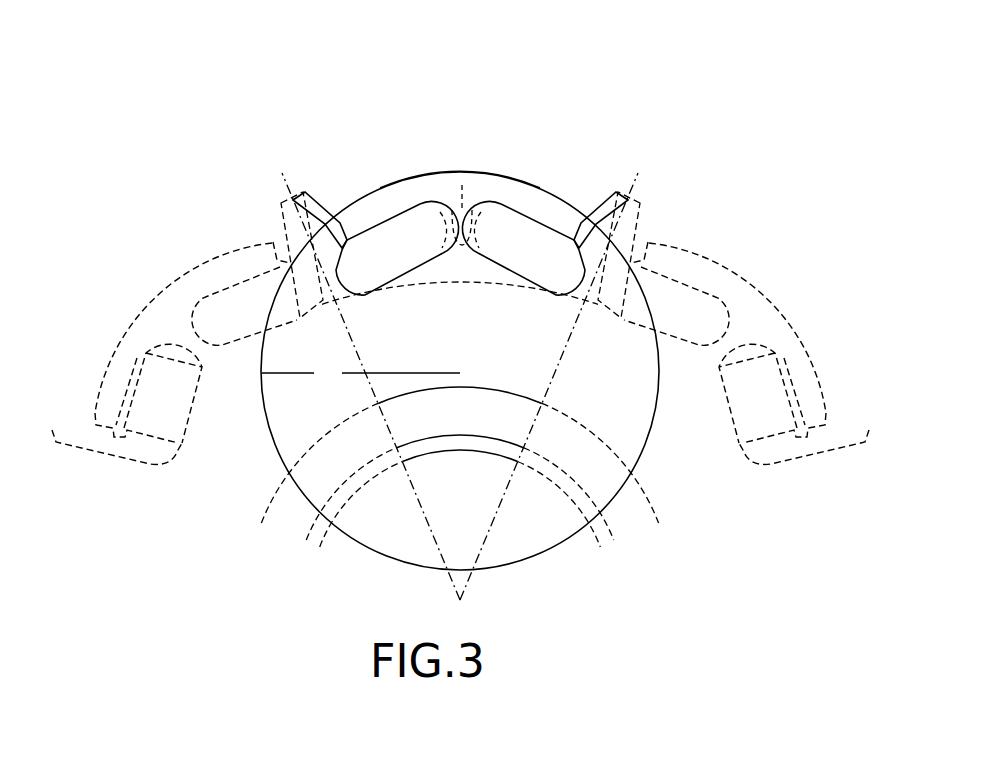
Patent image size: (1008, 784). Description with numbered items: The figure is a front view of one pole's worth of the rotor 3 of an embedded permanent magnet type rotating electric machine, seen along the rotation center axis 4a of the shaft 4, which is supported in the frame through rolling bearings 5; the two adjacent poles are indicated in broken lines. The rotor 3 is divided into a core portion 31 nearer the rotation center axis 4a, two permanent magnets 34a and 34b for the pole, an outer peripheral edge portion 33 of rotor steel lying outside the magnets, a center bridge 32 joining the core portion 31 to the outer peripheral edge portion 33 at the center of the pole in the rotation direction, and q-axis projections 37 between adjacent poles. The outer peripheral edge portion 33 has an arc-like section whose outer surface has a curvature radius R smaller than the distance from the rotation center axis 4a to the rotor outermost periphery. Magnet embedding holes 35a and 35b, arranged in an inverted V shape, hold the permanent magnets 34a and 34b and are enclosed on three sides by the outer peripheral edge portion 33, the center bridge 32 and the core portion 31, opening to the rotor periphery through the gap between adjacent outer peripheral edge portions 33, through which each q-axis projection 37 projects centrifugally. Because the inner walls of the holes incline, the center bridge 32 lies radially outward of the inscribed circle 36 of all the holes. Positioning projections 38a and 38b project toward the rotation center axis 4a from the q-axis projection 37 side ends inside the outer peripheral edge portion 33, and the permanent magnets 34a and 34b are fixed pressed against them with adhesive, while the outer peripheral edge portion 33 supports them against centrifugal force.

The rotor 3 is at (562, 70).
The shaft 4 is at (470, 507).
The rotation center axis 4a is at (460, 600).
The rolling bearings 5 is at (513, 423).
The core portion 31 is at (472, 340).
The center bridge 32 is at (462, 185).
The outer peripheral edge portion 33 is at (452, 178).
The permanent magnet 34a is at (387, 238).
The permanent magnet 34b is at (532, 238).
The magnet embedding hole 35a is at (428, 220).
The magnet embedding hole 35b is at (490, 220).
The inscribed circle 36 is at (492, 285).
The q-axis projection 37 is at (298, 196).
The positioning projection 38a is at (320, 225).
The positioning projection 38b is at (597, 222).
The curvature radius R is at (361, 373).